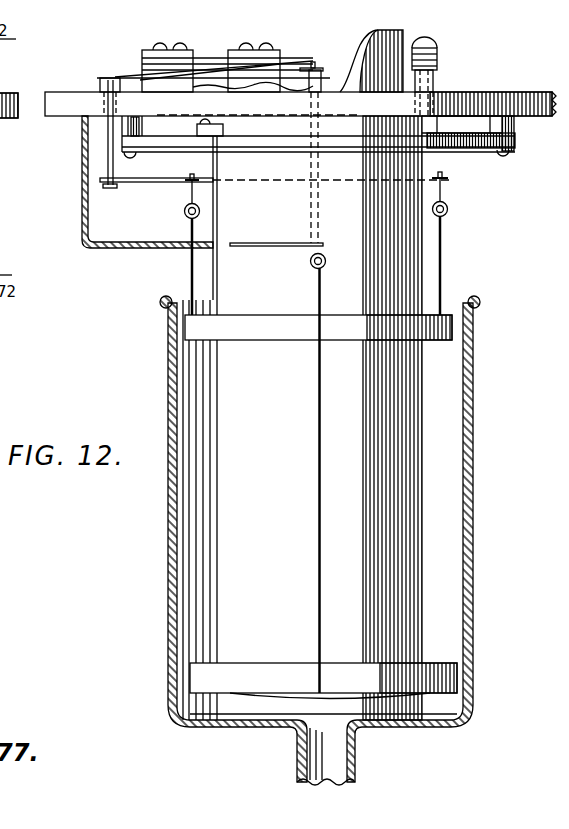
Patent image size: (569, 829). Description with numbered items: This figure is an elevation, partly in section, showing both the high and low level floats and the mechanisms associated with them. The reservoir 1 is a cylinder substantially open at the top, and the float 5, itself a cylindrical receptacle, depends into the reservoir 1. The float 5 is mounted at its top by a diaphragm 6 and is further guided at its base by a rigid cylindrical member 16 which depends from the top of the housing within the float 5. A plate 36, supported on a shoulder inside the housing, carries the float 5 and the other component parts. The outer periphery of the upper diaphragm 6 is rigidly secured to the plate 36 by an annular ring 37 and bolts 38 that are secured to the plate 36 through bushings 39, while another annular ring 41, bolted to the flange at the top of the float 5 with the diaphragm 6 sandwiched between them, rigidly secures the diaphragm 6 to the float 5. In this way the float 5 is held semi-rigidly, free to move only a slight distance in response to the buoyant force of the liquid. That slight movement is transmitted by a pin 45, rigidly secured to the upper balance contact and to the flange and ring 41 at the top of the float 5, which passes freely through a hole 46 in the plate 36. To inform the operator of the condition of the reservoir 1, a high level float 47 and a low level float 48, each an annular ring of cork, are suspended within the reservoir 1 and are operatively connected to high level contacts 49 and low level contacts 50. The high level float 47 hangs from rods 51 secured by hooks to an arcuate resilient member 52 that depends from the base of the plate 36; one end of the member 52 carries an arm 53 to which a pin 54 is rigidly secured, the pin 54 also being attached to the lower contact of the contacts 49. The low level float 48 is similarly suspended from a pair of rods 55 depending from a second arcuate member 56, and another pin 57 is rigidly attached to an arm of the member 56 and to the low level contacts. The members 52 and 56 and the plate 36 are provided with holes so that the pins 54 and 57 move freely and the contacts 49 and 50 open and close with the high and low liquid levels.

The reservoir 1 is at (478, 390).
The float 5 is at (422, 503).
The diaphragm 6 is at (470, 133).
The rigid cylindrical member 16 is at (405, 37).
The plate 36 is at (526, 92).
The annular ring 37 is at (515, 141).
The bolts 38 is at (131, 157).
The bushings 39 is at (140, 128).
The annular ring 41 is at (220, 130).
The pin 45 is at (438, 70).
The hole 46 is at (437, 100).
The high level float 47 is at (437, 341).
The low level float 48 is at (445, 693).
The high level contacts 49 is at (120, 80).
The low level contacts 50 is at (283, 72).
The rods 51 is at (190, 273).
The arcuate resilient member 52 is at (195, 175).
The arm 53 is at (150, 183).
The pin 54 is at (104, 176).
The rods 55 is at (316, 495).
The second arcuate member 56 is at (122, 250).
The pin 57 is at (322, 80).